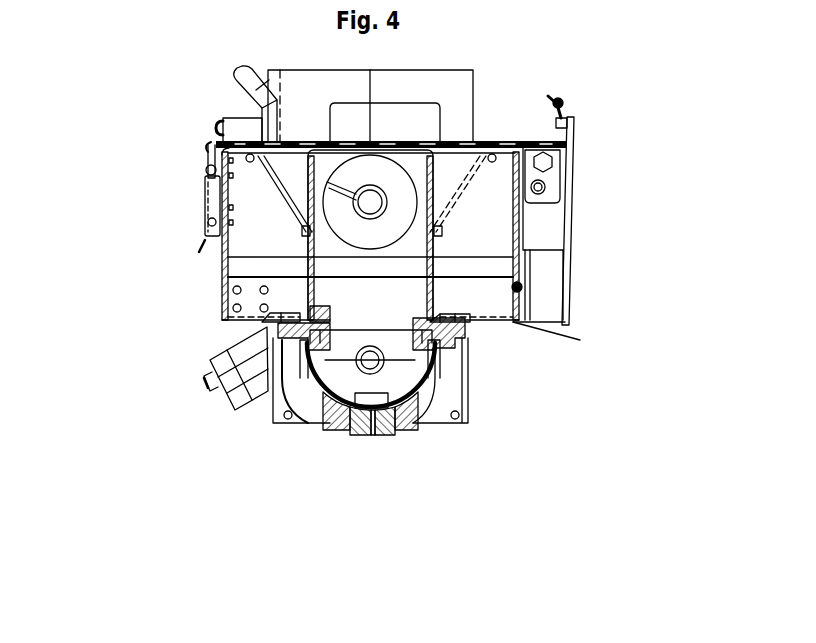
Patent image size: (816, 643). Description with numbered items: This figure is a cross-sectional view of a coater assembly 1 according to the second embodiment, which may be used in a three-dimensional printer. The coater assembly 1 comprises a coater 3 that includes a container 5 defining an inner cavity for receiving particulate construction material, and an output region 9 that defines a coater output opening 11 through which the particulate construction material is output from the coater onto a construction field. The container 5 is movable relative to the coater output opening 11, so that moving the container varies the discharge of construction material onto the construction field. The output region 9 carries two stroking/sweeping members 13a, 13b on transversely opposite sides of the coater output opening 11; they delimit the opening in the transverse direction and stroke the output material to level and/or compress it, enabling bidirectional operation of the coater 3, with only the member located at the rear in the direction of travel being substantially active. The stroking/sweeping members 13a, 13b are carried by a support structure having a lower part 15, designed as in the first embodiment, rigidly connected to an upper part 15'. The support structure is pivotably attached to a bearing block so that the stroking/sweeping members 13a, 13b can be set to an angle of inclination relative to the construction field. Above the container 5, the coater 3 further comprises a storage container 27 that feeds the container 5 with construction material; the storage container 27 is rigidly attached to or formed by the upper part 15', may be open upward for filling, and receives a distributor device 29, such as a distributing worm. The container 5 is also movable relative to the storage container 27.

The coater assembly 1 is at (150, 74).
The coater 3 is at (190, 315).
The container 5 is at (330, 400).
The output region 9 is at (346, 440).
The coater output opening 11 is at (373, 440).
The stroking/sweeping member 13a is at (358, 436).
The stroking/sweeping member 13b is at (390, 436).
The lower part of the support structure 15 is at (485, 396).
The upper part of the support structure 15' is at (480, 348).
The storage container 27 is at (413, 248).
The distributor device 29 is at (392, 178).